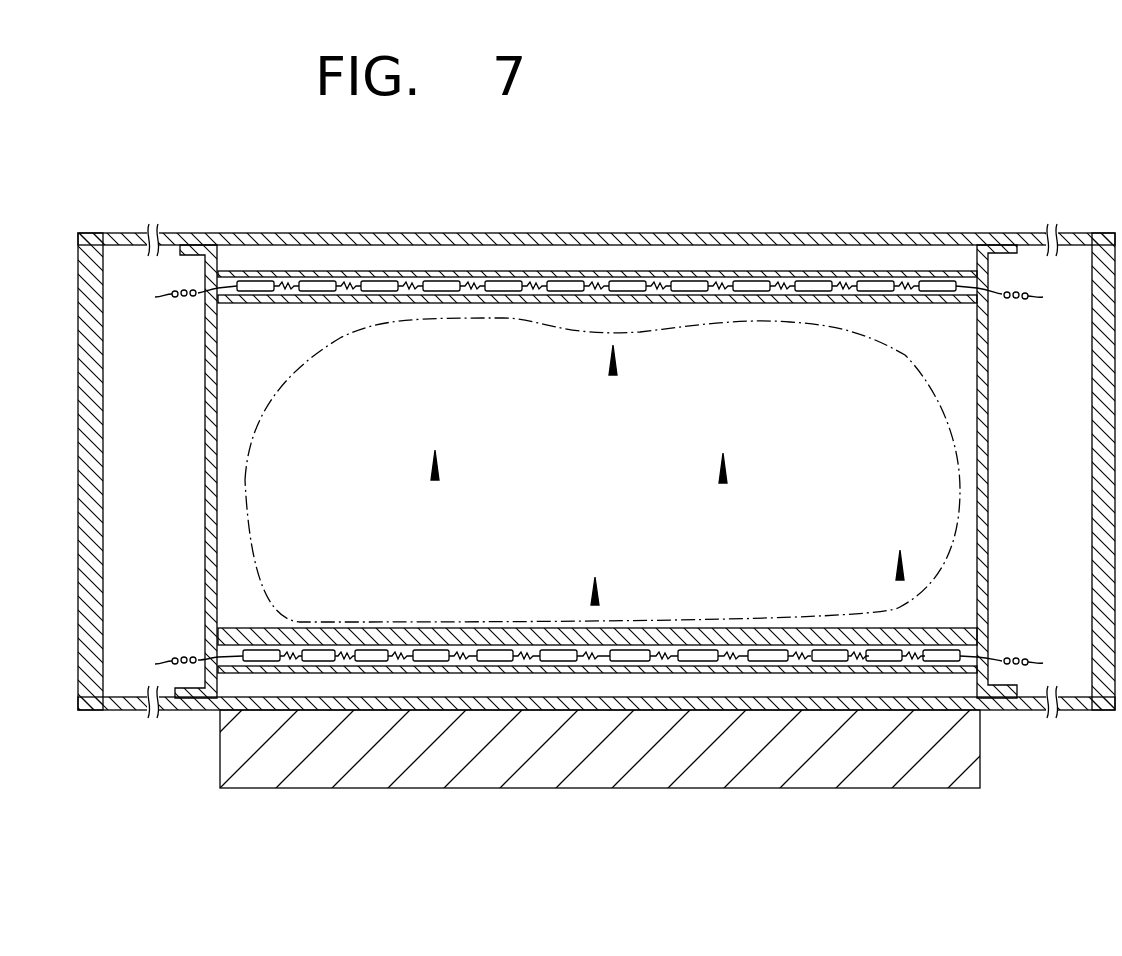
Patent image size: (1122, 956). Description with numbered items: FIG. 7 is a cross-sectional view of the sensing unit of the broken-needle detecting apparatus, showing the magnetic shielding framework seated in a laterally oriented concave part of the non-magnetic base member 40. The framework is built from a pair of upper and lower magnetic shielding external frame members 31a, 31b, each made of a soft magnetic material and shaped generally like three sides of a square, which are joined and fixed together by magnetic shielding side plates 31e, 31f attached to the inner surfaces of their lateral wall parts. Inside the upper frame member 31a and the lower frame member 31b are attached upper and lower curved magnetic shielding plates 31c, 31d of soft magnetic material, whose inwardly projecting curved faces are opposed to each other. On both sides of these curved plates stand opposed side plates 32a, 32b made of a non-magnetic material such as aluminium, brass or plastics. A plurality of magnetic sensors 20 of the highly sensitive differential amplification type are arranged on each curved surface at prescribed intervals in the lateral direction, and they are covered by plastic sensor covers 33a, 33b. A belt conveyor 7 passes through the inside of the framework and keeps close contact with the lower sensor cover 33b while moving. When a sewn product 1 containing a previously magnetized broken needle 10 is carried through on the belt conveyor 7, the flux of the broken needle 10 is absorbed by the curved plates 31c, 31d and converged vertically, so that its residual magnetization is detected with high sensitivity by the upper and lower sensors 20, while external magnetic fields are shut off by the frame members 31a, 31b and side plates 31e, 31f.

The sewn product 1 is at (938, 412).
The belt conveyor 7 is at (597, 709).
The broken needle 10 is at (442, 462).
The magnetic sensors 20 is at (257, 303).
The upper magnetic shielding external frame member 31a is at (492, 235).
The lower magnetic shielding external frame member 31b is at (852, 700).
The upper curved magnetic shielding plate 31c is at (775, 272).
The lower curved magnetic shielding plate 31d is at (587, 673).
The magnetic shielding side plate 31e is at (1093, 562).
The magnetic shielding side plate 31f is at (103, 562).
The side plate 32a is at (988, 485).
The side plate 32b is at (205, 420).
The sensor cover 33a is at (912, 304).
The sensor cover 33b is at (765, 640).
The base member 40 is at (325, 778).